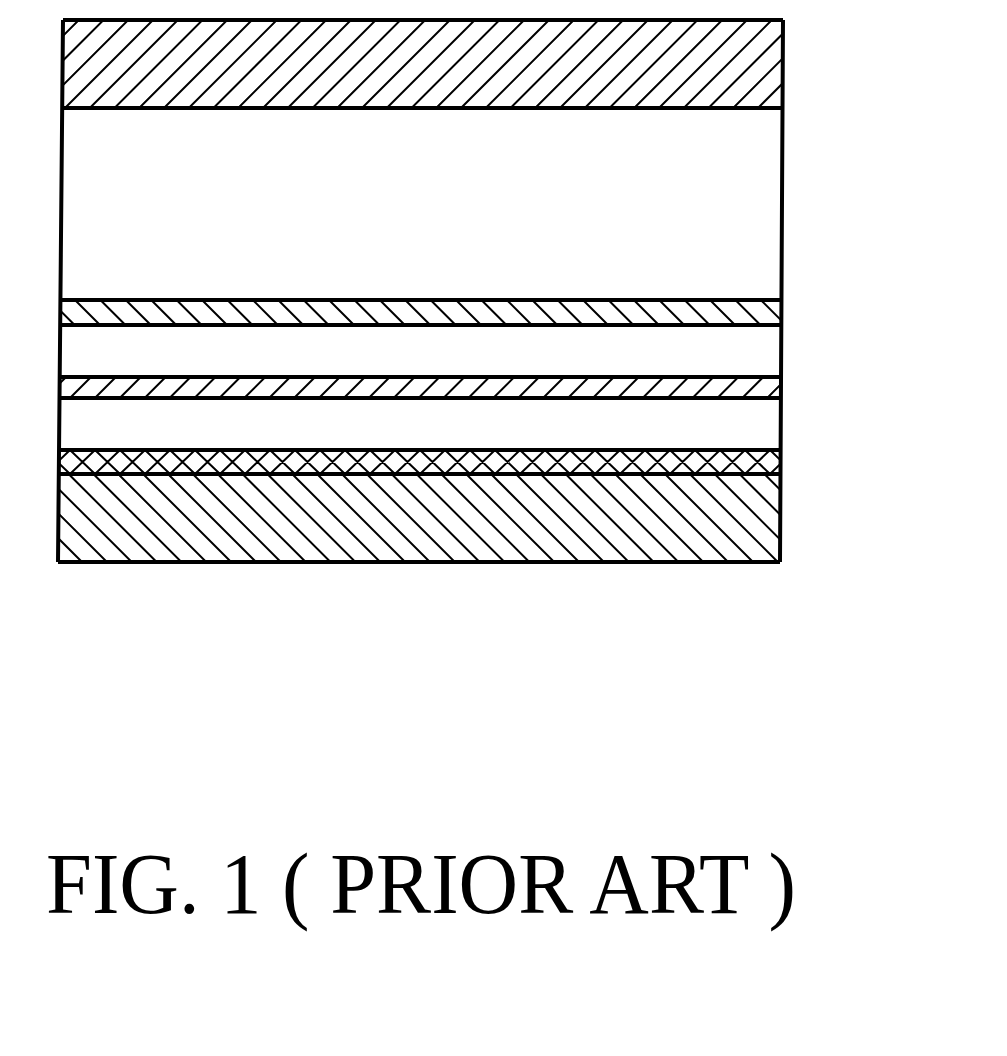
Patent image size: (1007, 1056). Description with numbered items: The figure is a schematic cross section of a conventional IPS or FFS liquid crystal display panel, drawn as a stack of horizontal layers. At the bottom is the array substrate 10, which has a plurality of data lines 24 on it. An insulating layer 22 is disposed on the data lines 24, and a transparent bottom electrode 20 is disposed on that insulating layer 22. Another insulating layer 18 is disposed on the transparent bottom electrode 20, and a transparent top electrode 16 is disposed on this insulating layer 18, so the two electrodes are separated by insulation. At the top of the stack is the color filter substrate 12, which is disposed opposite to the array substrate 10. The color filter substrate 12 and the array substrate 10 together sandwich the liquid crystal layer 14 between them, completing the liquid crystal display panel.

The array substrate 10 is at (767, 518).
The color filter substrate 12 is at (767, 62).
The liquid crystal layer 14 is at (767, 208).
The transparent top electrode 16 is at (767, 311).
The insulating layer 18 is at (767, 350).
The transparent bottom electrode 20 is at (767, 389).
The insulating layer 22 is at (767, 424).
The data lines 24 is at (770, 462).